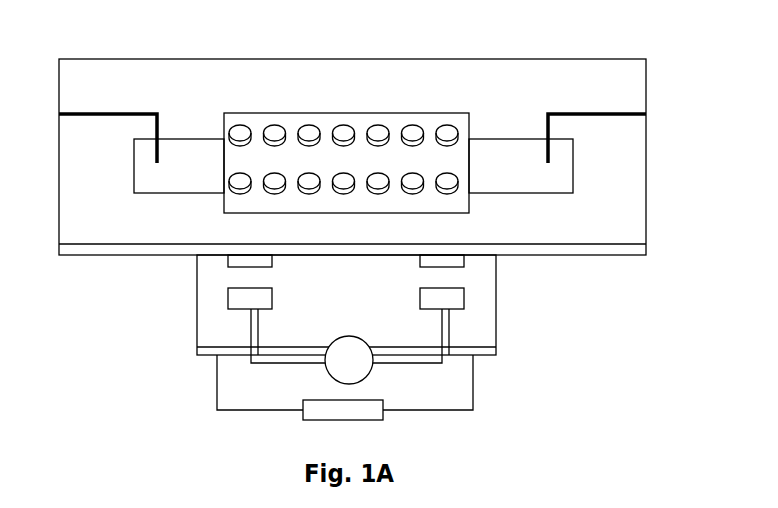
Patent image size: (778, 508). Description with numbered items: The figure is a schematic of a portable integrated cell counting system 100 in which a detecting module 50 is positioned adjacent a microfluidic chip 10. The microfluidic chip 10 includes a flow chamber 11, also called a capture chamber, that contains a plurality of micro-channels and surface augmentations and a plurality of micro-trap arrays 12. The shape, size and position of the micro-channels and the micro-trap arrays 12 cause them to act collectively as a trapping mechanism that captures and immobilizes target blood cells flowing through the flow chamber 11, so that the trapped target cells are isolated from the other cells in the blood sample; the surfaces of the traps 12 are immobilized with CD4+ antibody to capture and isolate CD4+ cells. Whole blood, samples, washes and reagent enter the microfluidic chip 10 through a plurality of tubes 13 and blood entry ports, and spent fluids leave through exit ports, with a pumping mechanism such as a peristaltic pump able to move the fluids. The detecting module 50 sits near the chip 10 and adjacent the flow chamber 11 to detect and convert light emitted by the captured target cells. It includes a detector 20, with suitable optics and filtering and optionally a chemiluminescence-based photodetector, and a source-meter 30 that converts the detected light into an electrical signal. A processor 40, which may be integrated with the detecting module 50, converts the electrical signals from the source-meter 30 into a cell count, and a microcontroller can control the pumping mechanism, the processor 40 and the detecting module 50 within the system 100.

The microfluidic chip 10 is at (615, 262).
The flow chamber 11 is at (471, 120).
The micro-trap arrays 12 is at (312, 128).
The tubes 13 is at (100, 112).
The detector 20 is at (197, 308).
The source-meter 30 is at (351, 336).
The processor 40 is at (303, 420).
The detecting module 50 is at (177, 396).
The portable integrated cell counting system 100 is at (598, 357).